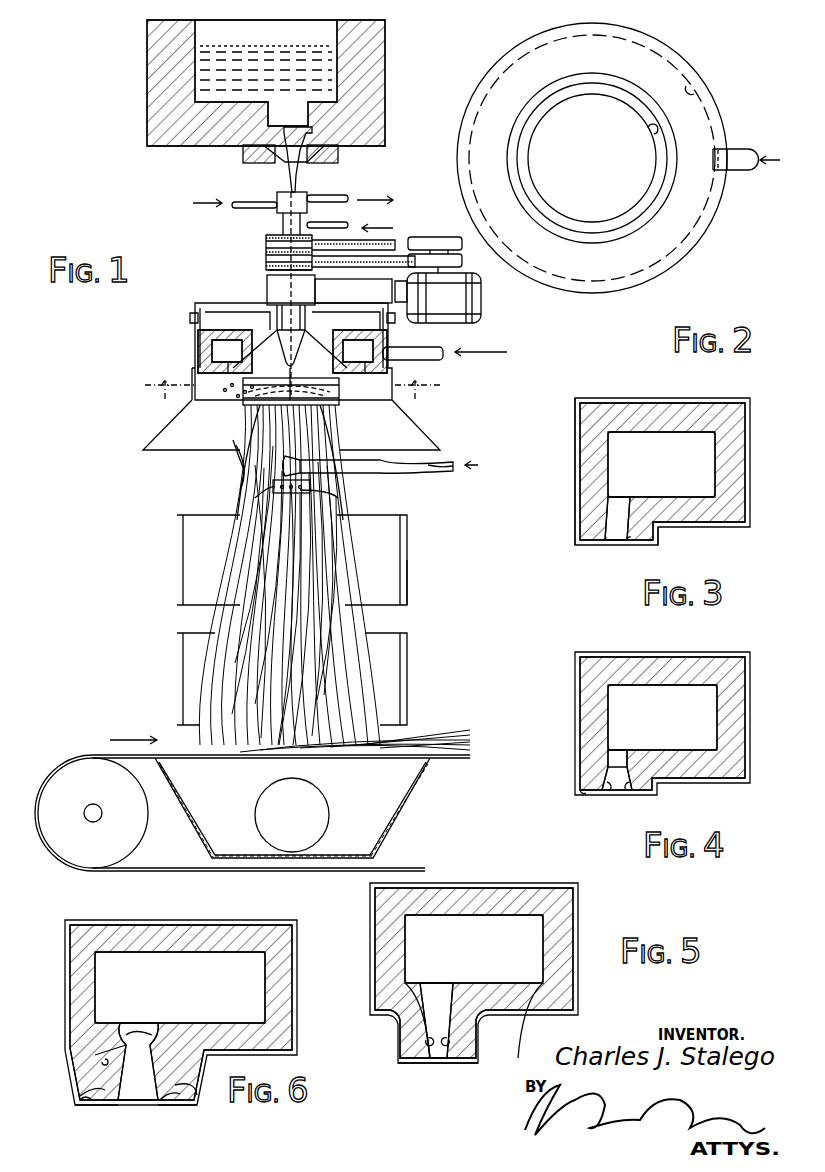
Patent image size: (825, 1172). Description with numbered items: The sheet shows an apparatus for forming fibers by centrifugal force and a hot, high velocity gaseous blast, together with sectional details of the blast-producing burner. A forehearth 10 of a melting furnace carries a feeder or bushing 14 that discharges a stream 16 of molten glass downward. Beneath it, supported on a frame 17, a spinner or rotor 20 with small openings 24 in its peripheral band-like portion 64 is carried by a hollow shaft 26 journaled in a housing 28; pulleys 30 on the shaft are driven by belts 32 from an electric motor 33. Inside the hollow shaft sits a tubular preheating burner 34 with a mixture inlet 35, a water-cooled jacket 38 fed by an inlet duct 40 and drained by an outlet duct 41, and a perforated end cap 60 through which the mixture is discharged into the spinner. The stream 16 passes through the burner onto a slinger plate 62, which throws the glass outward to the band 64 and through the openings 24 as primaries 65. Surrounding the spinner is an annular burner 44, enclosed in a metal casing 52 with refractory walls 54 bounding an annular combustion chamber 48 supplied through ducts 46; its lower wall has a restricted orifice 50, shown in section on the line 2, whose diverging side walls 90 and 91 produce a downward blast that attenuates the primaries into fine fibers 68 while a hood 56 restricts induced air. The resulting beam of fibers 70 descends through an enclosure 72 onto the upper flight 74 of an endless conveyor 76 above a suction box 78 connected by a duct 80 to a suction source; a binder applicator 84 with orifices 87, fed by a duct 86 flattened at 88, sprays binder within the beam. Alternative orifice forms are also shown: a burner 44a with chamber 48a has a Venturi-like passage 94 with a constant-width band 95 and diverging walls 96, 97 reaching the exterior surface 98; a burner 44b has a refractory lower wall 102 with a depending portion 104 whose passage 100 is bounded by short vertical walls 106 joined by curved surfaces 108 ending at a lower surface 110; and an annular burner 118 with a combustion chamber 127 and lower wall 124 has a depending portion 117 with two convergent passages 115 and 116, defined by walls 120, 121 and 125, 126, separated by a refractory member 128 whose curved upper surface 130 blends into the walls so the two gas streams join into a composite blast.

In FIG. 1, the forehearth 10 is at (147, 69).
In FIG. 1, the feeder or bushing 14 is at (280, 162).
In FIG. 1, the stream of molten glass 16 is at (290, 181).
In FIG. 1, the water-cooled jacket 38 is at (277, 198).
In FIG. 1, the outlet duct 41 is at (335, 197).
In FIG. 1, the inlet duct 40 is at (240, 206).
In FIG. 1, the pulleys or sheaves 30 is at (284, 228).
In FIG. 1, the mixture inlet 35 is at (345, 226).
In FIG. 1, the frame 17 is at (380, 277).
In FIG. 1, the belts 32 is at (266, 241).
In FIG. 1, the housing 28 is at (268, 270).
In FIG. 1, the shaft 26 is at (267, 280).
In FIG. 1, the electric motor 33 is at (481, 300).
In FIG. 1, the spinner or rotor 20 is at (196, 304).
In FIG. 1, the annular burner 44 is at (189, 360).
In FIG. 2, the annular burner 44 is at (707, 58).
In FIG. 3, the annular burner 44 is at (692, 390).
In FIG. 1, the refractory walls 54 is at (190, 320).
In FIG. 3, the refractory walls 54 is at (680, 510).
In FIG. 1, the combustion chamber 48 is at (225, 352).
In FIG. 2, the combustion chamber 48 is at (695, 95).
In FIG. 3, the combustion chamber 48 is at (661, 464).
In FIG. 1, the metal jacket or casing 52 is at (245, 358).
In FIG. 3, the metal jacket or casing 52 is at (575, 438).
In FIG. 1, the tubular burner 34 is at (283, 340).
In FIG. 1, the perforated end cap 60 is at (325, 350).
In FIG. 1, the pipes or ducts 46 is at (445, 353).
In FIG. 2, the pipes or ducts 46 is at (735, 170).
In FIG. 1, the section line 2— 2 is at (292, 398).
In FIG. 1, the primaries 65 is at (339, 392).
In FIG. 1, the fine fibers 68 is at (344, 440).
In FIG. 1, the gas discharge passage or orifice 50 is at (243, 392).
In FIG. 2, the gas discharge passage or orifice 50 is at (652, 130).
In FIG. 3, the gas discharge passage or orifice 50 is at (618, 553).
In FIG. 1, the small openings 24 is at (275, 397).
In FIG. 1, the band-like portion 64 is at (233, 450).
In FIG. 1, the slinger plate 62 is at (238, 470).
In FIG. 1, the flattened duct configuration 88 is at (365, 473).
In FIG. 1, the binder duct 86 is at (450, 470).
In FIG. 1, the metal jacket or hood 56 is at (430, 474).
In FIG. 1, the binder applicator 84 is at (310, 487).
In FIG. 1, the orifices 87 is at (262, 498).
In FIG. 1, the beam of fibers 70 is at (234, 564).
In FIG. 1, the housing or enclosure 72 is at (407, 598).
In FIG. 1, the upper flight 74 is at (440, 762).
In FIG. 1, the endless conveyor 76 is at (170, 872).
In FIG. 1, the suction box 78 is at (390, 818).
In FIG. 1, the tube or duct 80 is at (276, 842).
In FIG. 3, the annular side wall 90 is at (604, 542).
In FIG. 3, the annular side wall 91 is at (630, 542).
In FIG. 4, the annular burner 44a is at (717, 642).
In FIG. 4, the combustion chamber 48a is at (662, 717).
In FIG. 4, the band-like portion 95 is at (615, 757).
In FIG. 4, the gas passage or orifice 94 is at (628, 797).
In FIG. 4, the angularly disposed wall 96 is at (604, 797).
In FIG. 4, the angularly disposed wall 97 is at (632, 795).
In FIG. 4, the exterior surface 98 is at (590, 796).
In FIG. 5, the burner 44b is at (537, 879).
In FIG. 5, the orifice or passage 100 is at (441, 1075).
In FIG. 5, the lower wall 102 is at (393, 1000).
In FIG. 5, the arcuate or curved surfaces 108 is at (400, 1030).
In FIG. 5, the annular depending portion 104 is at (426, 1040).
In FIG. 5, the vertically disposed walls 106 is at (426, 1045).
In FIG. 5, the lower surface 110 is at (420, 1066).
In FIG. 6, the annular burner 118 is at (287, 912).
In FIG. 6, the combustion zone or chamber 127 is at (180, 987).
In FIG. 6, the upper surface zone 130 is at (155, 1023).
In FIG. 6, the member 128 is at (130, 1040).
In FIG. 6, the depending portion 117 is at (98, 1060).
In FIG. 6, the wall 120 is at (104, 1065).
In FIG. 6, the wall 121 is at (84, 1094).
In FIG. 6, the lower wall 124 is at (96, 1105).
In FIG. 6, the passage 115 is at (117, 1110).
In FIG. 6, the annular gas discharge passage 116 is at (160, 1110).
In FIG. 6, the wall 125 is at (164, 1102).
In FIG. 6, the wall 126 is at (188, 1098).